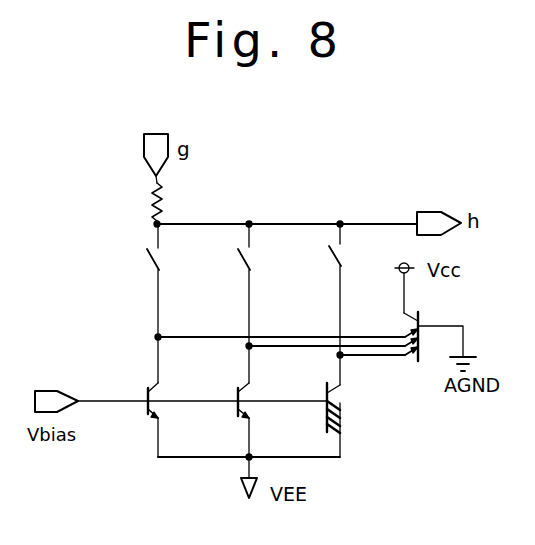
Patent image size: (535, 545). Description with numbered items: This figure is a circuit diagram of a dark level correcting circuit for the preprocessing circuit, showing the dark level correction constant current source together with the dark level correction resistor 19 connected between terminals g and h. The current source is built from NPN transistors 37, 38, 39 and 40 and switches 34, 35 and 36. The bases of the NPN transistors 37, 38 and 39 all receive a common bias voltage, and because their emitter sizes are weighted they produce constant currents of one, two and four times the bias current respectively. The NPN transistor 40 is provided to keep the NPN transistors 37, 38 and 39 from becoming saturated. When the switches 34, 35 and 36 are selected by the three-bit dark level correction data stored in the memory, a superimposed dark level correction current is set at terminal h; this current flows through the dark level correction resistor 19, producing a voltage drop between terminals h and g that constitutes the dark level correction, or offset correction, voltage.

The dark level correction resistor 19 is at (164, 190).
The switch 34 is at (148, 259).
The switch 35 is at (238, 250).
The switch 36 is at (330, 247).
The NPN transistor 37 is at (152, 415).
The NPN transistor 38 is at (245, 417).
The NPN transistor 39 is at (324, 407).
The NPN transistor 40 is at (426, 318).